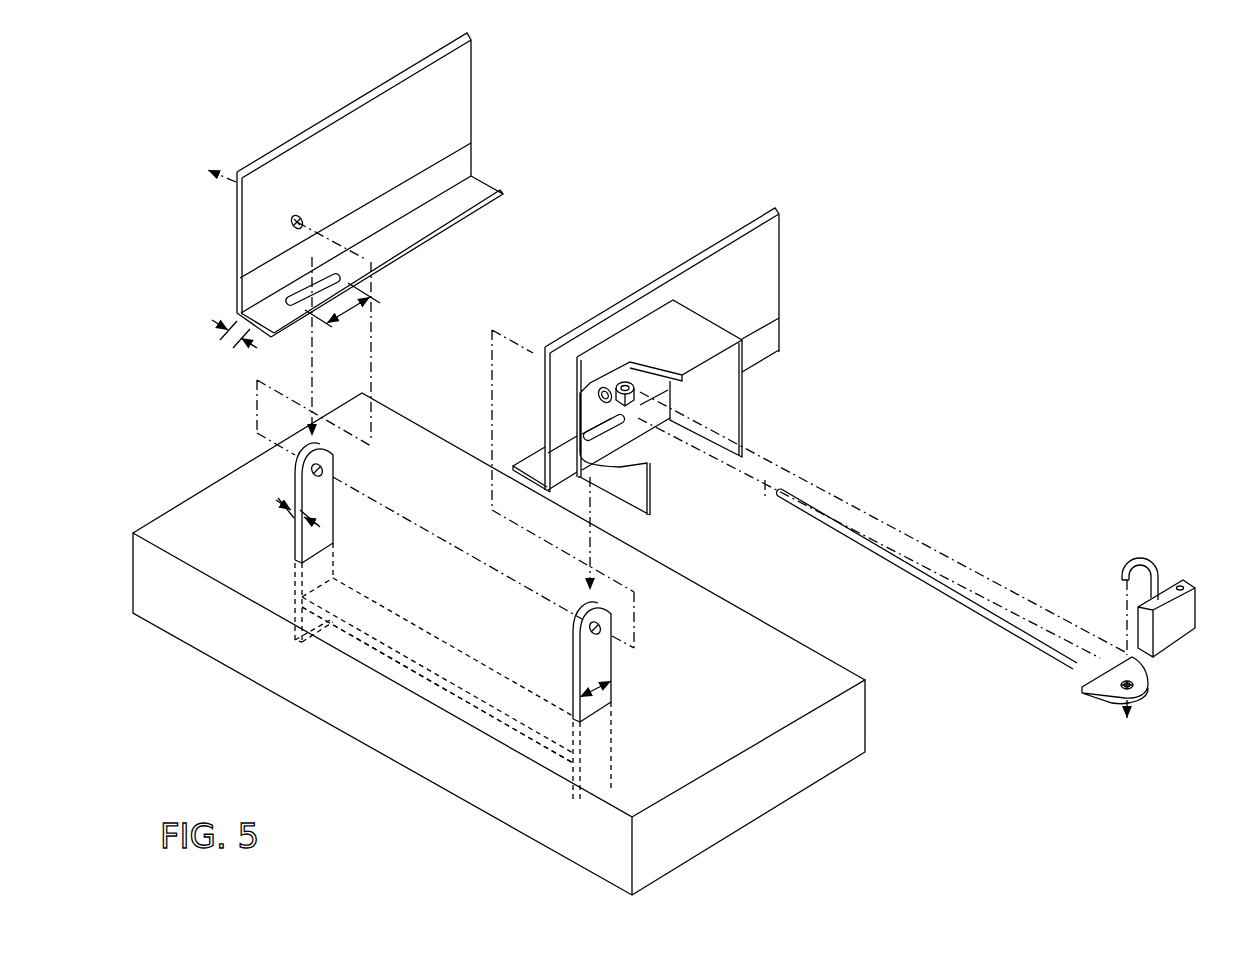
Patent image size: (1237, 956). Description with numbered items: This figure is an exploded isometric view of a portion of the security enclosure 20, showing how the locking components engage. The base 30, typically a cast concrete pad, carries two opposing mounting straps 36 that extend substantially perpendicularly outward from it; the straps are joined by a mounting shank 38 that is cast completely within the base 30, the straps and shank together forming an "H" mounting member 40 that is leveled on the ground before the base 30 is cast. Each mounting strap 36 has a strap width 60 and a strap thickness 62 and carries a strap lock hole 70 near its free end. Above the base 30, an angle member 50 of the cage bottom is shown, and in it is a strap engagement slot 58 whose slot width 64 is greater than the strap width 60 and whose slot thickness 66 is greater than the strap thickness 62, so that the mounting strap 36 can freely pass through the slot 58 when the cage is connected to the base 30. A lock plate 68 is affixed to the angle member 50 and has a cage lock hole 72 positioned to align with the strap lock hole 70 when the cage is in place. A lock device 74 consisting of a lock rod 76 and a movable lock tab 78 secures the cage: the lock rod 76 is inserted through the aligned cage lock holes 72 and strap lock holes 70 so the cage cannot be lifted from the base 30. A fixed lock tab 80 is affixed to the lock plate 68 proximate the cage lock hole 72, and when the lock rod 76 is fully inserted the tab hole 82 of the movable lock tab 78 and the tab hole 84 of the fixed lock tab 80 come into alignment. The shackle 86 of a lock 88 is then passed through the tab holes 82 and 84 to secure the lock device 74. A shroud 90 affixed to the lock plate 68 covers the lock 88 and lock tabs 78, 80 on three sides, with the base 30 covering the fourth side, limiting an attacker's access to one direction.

The security enclosure 20 is at (106, 782).
The base 30 is at (838, 730).
The mounting strap 36 is at (592, 771).
The mounting shank 38 is at (528, 715).
The "H" mounting member 40 is at (372, 623).
The angle member 50 is at (540, 262).
The strap engagement slot 58 is at (598, 433).
The strap width 60 is at (612, 683).
The strap thickness 62 is at (278, 498).
The slot width 64 is at (372, 325).
The slot thickness 66 is at (214, 322).
The lock plate 68 is at (830, 360).
The strap lock hole 70 is at (600, 626).
The cage lock hole 72 is at (600, 394).
The lock device 74 is at (1098, 680).
The lock rod 76 is at (1018, 630).
The lock tab 78 is at (1140, 678).
The lock tab 80 is at (640, 392).
The tab hole 82 is at (1122, 687).
The tab hole 84 is at (645, 390).
The shackle 86 is at (1140, 563).
The lock 88 is at (1178, 622).
The shroud 90 is at (730, 383).